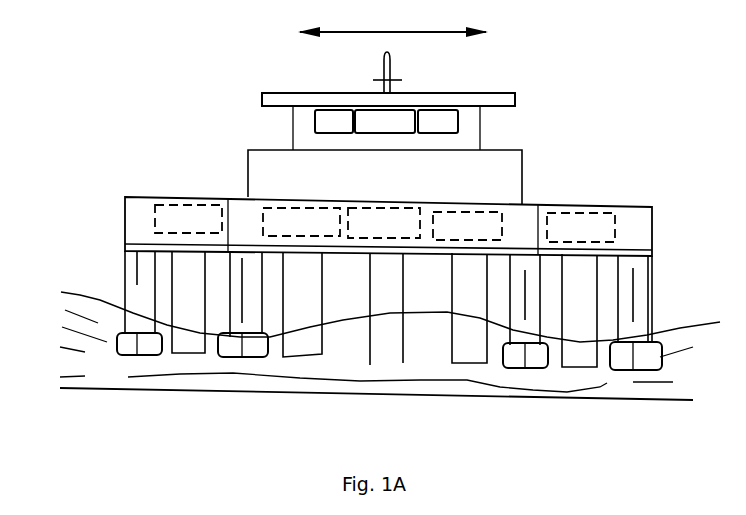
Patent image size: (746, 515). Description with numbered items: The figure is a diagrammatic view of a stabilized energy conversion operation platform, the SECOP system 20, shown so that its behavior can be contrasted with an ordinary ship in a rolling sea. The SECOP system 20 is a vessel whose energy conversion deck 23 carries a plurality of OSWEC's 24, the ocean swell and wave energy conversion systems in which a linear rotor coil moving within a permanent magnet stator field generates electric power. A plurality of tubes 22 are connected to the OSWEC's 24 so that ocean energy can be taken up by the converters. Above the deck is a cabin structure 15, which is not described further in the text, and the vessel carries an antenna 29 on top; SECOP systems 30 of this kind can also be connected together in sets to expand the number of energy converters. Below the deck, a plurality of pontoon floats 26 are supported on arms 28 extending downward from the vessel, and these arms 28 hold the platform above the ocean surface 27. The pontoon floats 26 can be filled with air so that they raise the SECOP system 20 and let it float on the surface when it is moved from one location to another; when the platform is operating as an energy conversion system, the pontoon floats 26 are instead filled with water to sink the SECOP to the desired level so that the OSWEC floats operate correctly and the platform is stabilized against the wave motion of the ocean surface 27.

The antenna 29 is at (398, 65).
The connected SECOP systems 30 is at (262, 147).
The cabin 15 is at (481, 123).
The SECOP system 20 is at (238, 195).
The energy conversion deck 23 is at (630, 225).
The OSWEC 24 is at (402, 208).
The arms 28 is at (123, 283).
The tubes 22 is at (378, 366).
The pontoon floats 26 is at (635, 371).
The ocean surface 27 is at (65, 298).